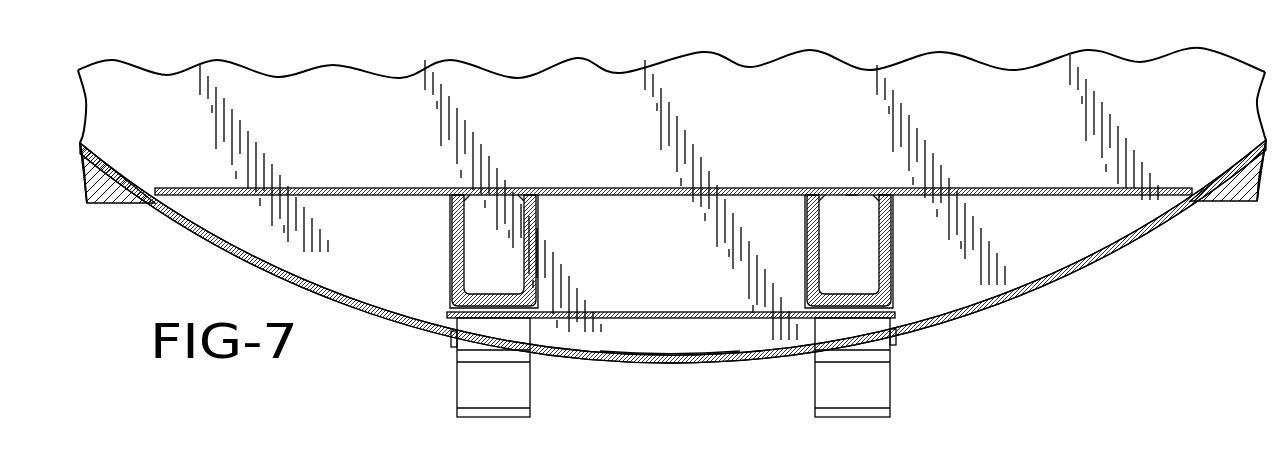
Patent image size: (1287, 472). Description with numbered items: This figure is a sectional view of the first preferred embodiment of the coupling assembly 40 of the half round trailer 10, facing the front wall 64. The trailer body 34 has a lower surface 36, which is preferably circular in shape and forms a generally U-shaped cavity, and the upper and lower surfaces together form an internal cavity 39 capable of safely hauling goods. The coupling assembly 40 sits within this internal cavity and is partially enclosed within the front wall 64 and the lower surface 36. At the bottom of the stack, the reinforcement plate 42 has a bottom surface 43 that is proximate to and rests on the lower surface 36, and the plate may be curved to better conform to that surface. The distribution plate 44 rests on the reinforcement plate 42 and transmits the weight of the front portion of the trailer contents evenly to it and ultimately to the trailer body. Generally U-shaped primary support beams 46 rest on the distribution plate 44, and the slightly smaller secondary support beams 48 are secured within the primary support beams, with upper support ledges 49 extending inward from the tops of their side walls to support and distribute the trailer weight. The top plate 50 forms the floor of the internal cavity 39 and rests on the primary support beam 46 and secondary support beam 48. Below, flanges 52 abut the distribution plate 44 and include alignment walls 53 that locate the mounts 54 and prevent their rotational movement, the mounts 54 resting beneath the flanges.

The trailer 10 is at (1173, 236).
The body 34 is at (673, 282).
The lower surface 36 is at (1064, 273).
The internal cavity 39 is at (995, 103).
The coupling assembly 40 is at (623, 189).
The reinforcement plate 42 is at (692, 345).
The bottom surface 43 is at (660, 366).
The distribution plate 44 is at (629, 315).
The primary support beams 46 is at (450, 263).
The secondary support beams 48 is at (460, 229).
The upper support ledges 49 is at (465, 193).
The top plate 50 is at (852, 190).
The flanges 52 is at (503, 323).
The alignment walls 53 is at (452, 340).
The mounts 54 is at (495, 396).
The front wall 64 is at (389, 110).